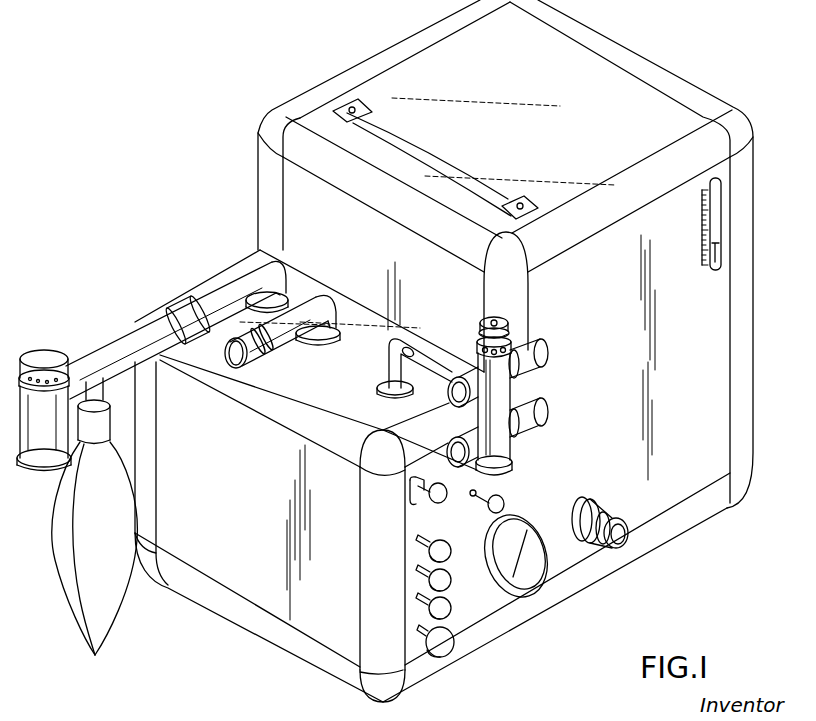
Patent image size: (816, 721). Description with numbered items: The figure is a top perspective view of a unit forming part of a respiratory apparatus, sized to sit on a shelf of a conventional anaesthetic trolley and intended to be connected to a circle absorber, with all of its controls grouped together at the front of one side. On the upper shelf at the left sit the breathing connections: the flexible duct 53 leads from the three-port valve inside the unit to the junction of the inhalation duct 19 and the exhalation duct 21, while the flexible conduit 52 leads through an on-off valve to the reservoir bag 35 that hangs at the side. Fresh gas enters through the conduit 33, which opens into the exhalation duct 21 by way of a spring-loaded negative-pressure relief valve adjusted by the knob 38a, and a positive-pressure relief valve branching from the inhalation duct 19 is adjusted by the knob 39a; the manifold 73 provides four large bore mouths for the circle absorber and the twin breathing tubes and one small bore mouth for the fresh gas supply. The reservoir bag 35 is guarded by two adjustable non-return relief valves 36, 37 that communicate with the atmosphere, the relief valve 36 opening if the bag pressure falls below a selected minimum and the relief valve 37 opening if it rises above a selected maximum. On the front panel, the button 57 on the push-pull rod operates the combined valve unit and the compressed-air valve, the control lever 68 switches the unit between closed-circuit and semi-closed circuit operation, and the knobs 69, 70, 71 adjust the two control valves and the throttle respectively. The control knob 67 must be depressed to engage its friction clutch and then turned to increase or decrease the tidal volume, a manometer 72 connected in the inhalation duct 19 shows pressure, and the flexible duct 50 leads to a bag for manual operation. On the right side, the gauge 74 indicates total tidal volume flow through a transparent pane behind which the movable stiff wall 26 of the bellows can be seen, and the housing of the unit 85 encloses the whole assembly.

The cabinet housing 85 is at (444, 351).
The gauge 74 is at (700, 217).
The movable stiff wall 26 is at (712, 268).
The relief valve 37 is at (50, 368).
The relief valve 36 is at (42, 468).
The reservoir bag 35 is at (62, 540).
The flexible conduit 52 is at (158, 326).
The flexible duct 53 is at (262, 346).
The conduit 33 is at (406, 405).
The knob 39a is at (512, 322).
The manifold 73 is at (500, 398).
The knob 38a is at (516, 467).
The inhalation duct 19 is at (530, 378).
The exhalation duct 21 is at (528, 433).
The button 57 is at (428, 498).
The control lever 68 is at (481, 504).
The manometer 72 is at (532, 524).
The knob 69 is at (423, 558).
The knob 70 is at (423, 588).
The knob 71 is at (423, 616).
The control knob 67 is at (453, 650).
The flexible duct 50 is at (593, 542).